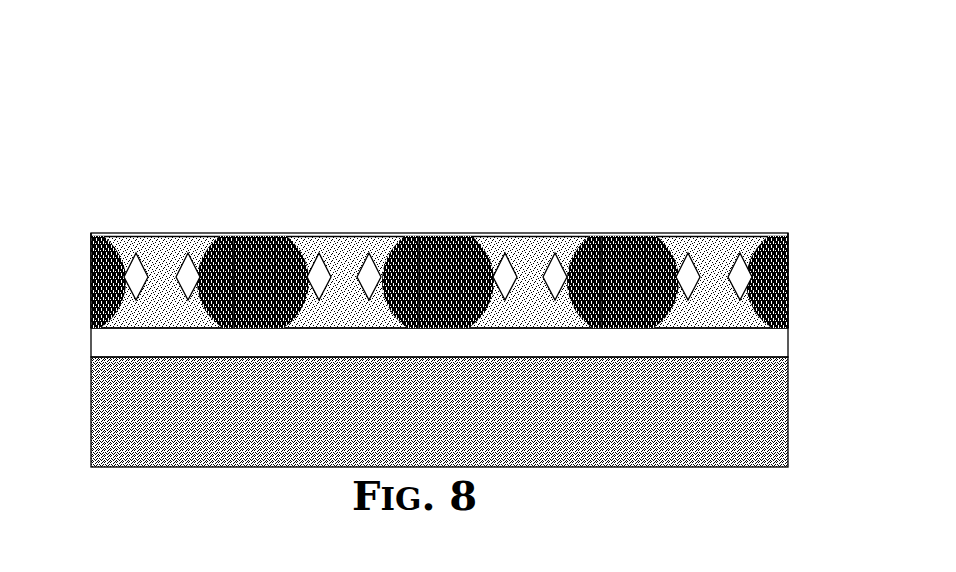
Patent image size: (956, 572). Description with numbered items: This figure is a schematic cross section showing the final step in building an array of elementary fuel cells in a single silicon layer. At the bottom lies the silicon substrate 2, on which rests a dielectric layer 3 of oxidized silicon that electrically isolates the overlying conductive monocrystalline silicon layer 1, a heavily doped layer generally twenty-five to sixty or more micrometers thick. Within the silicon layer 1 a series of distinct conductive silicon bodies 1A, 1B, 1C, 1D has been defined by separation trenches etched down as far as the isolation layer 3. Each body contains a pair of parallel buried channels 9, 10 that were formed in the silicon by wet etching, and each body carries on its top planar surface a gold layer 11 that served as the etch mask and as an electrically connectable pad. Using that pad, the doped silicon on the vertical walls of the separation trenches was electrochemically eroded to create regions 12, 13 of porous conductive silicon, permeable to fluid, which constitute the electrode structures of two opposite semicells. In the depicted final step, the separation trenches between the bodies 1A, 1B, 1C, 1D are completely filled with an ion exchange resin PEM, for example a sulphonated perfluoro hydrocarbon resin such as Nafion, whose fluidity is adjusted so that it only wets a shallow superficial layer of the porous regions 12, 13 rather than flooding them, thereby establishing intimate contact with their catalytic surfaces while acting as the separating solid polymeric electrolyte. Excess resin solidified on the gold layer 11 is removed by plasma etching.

The conductive monocrystalline silicon layer 1 is at (816, 234).
The conductive silicon body 1A is at (122, 232).
The conductive silicon body 1B is at (382, 232).
The conductive silicon body 1C is at (552, 232).
The conductive silicon body 1D is at (740, 232).
The silicon substrate 2 is at (787, 432).
The dielectric layer 3 is at (91, 343).
The parallel channel 9 is at (146, 292).
The parallel channel 10 is at (184, 295).
The gold layer 11 is at (153, 232).
The porous conductive silicon region 12 is at (91, 258).
The porous conductive silicon region 13 is at (790, 248).
The ion exchange resin PEM is at (252, 232).